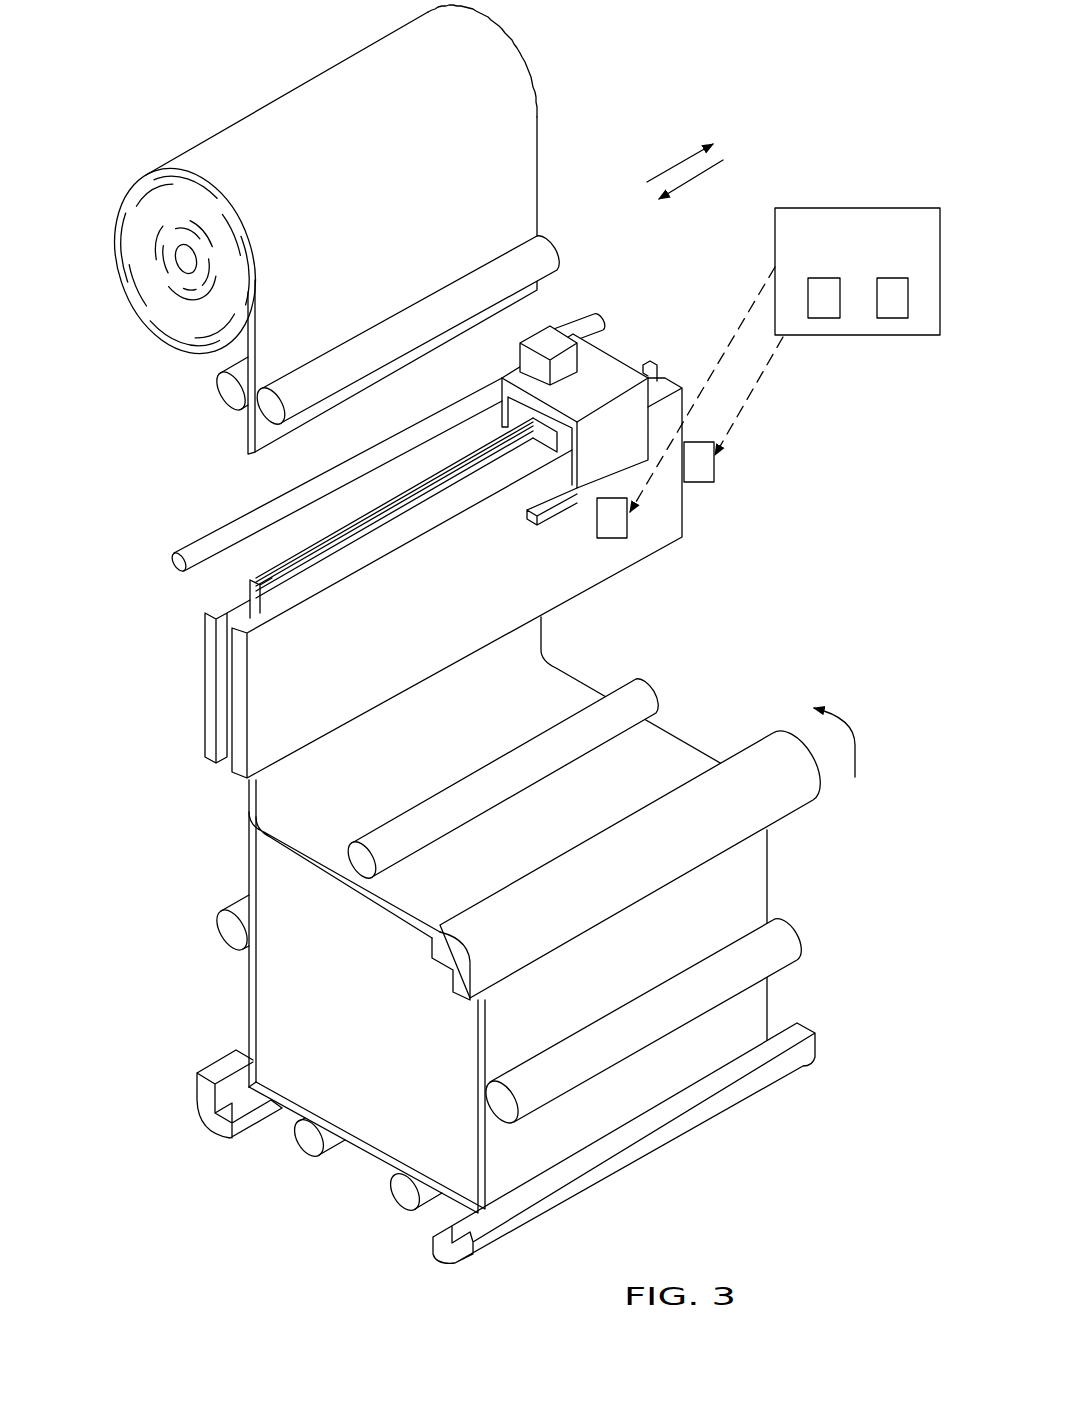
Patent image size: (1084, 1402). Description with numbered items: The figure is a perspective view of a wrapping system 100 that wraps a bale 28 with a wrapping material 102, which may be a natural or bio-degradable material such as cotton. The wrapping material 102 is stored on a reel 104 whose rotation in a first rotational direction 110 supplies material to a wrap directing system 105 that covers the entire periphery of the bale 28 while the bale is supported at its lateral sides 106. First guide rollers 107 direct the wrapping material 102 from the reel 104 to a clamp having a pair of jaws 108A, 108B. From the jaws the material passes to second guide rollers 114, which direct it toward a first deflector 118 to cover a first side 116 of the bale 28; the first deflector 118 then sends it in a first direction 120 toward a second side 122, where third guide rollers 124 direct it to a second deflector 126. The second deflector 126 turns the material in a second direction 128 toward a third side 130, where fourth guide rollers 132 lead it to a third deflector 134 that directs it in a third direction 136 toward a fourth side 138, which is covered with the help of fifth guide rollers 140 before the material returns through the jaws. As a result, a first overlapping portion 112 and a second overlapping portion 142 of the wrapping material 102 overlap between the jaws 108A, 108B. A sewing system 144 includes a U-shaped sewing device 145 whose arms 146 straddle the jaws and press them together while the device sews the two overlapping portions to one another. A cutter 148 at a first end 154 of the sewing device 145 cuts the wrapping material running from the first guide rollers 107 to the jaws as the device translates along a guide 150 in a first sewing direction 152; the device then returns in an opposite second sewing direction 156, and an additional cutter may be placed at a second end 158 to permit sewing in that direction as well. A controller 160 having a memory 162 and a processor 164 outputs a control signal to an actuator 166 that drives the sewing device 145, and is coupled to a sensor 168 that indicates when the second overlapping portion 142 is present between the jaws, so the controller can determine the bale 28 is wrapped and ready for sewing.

The wrapping system 100 is at (859, 61).
The wrapping material 102 is at (497, 78).
The reel 104 is at (127, 219).
The wrap directing system 105 is at (126, 460).
The lateral sides 106 is at (358, 1034).
The first guide rollers 107 is at (470, 278).
The jaw 108A is at (210, 692).
The jaw 108B is at (670, 533).
The first rotational direction 110 is at (106, 316).
The first overlapping portion 112 is at (252, 861).
The second guide rollers 114 is at (228, 922).
The first side 116 is at (174, 1027).
The first deflector 118 is at (238, 1104).
The first direction 120 is at (172, 1088).
The second side 122 is at (346, 1202).
The third guide rollers 124 is at (310, 1136).
The second deflector 126 is at (625, 1153).
The second direction 128 is at (485, 1268).
The third side 130 is at (844, 969).
The fourth guide rollers 132 is at (785, 932).
The third deflector 134 is at (777, 753).
The third direction 136 is at (857, 738).
The fourth side 138 is at (579, 658).
The fifth guide rollers 140 is at (360, 857).
The second overlapping portion 142 is at (265, 795).
The sewing system 144 is at (581, 298).
The sewing device 145 is at (600, 363).
The arms 146 is at (527, 512).
The cutter 148 is at (647, 357).
The guide 150 is at (205, 542).
The first sewing direction 152 is at (673, 165).
The first end 154 is at (664, 302).
The second sewing direction 156 is at (713, 170).
The second end 158 is at (491, 416).
The controller 160 is at (857, 207).
The memory 162 is at (820, 318).
The processor 164 is at (892, 318).
The actuator 166 is at (610, 538).
The sensor 168 is at (700, 487).
The bale 28 is at (271, 1004).